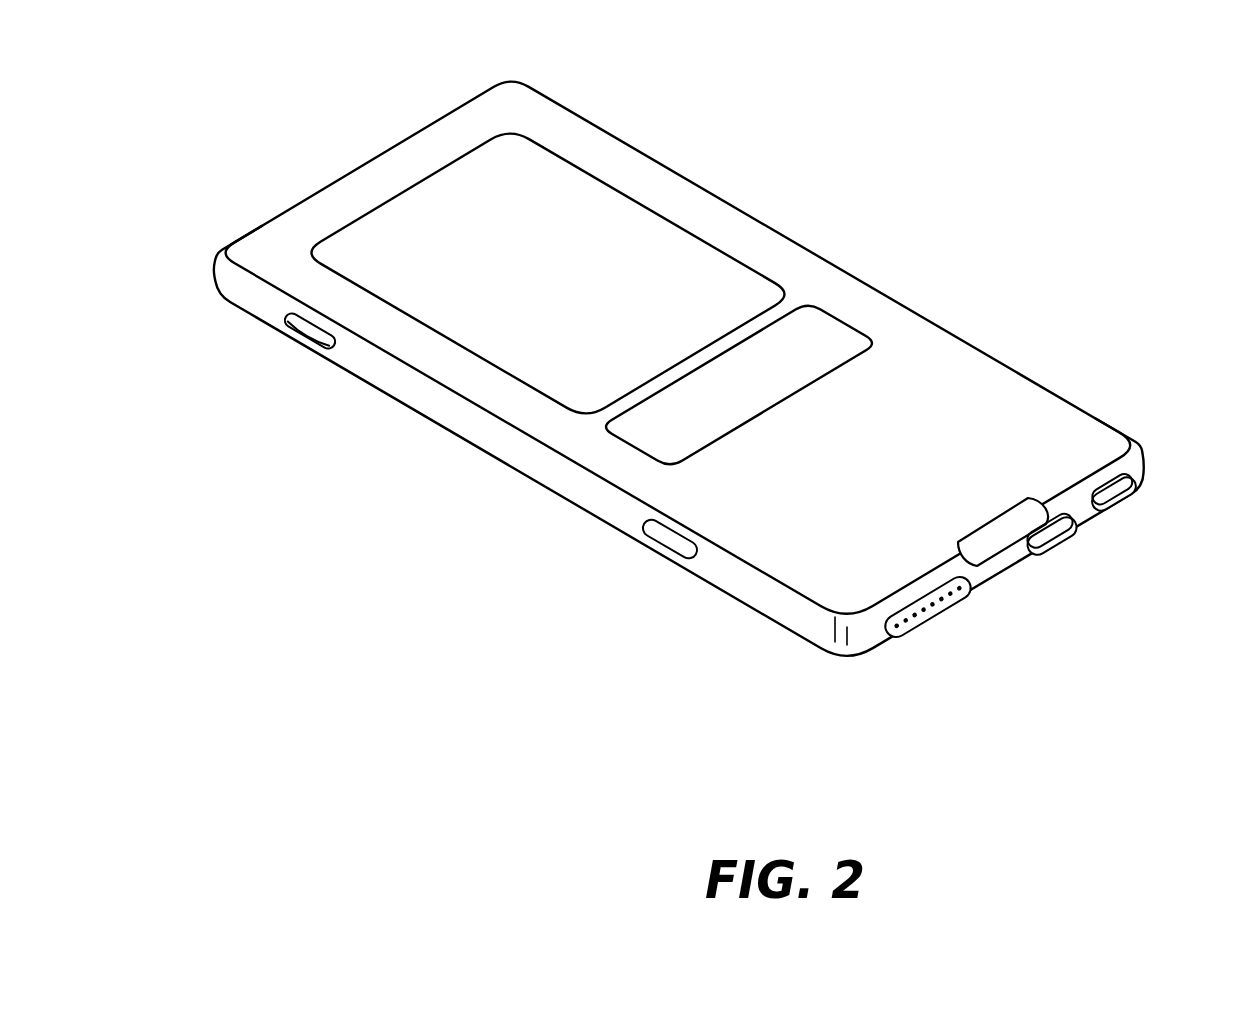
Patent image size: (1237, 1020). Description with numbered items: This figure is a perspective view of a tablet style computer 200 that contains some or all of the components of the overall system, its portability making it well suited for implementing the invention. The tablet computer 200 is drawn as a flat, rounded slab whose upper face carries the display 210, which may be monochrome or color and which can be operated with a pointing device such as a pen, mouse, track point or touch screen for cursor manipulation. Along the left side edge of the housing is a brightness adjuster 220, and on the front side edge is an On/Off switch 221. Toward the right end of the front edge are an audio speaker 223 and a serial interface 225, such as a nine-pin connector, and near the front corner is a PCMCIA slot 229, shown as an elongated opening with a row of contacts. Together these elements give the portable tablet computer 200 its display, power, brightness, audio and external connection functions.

The tablet style computer 200 is at (622, 790).
The display 210 is at (608, 205).
The brightness adjuster 220 is at (293, 340).
The On/Off switch 221 is at (665, 537).
The audio speaker 223 is at (1113, 503).
The serial interface 225 is at (1050, 542).
The PCMCIA slot 229 is at (933, 613).